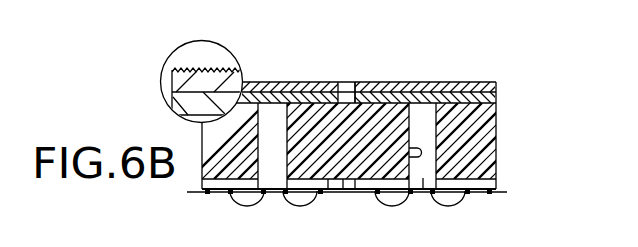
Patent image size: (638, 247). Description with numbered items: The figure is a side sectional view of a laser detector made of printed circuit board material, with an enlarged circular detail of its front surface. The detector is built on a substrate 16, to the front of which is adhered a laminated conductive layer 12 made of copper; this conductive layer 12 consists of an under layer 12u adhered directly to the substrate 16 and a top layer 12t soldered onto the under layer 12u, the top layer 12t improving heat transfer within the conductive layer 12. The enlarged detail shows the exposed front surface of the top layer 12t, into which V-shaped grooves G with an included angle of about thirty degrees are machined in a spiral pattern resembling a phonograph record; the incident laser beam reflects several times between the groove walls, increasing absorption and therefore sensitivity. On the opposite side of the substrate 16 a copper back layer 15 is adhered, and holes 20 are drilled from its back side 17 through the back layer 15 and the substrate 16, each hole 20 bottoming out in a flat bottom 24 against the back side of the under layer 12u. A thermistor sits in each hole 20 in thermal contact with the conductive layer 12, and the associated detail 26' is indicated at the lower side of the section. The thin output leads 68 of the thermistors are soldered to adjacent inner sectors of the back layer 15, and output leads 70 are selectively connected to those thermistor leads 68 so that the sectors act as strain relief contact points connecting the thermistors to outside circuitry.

The conductive layer 12 is at (476, 92).
The top layer 12t is at (494, 89).
The under layer 12u is at (495, 101).
The flat bottom 24 is at (418, 99).
The substrate 16 is at (486, 169).
The hole 20 is at (408, 153).
The back layer 15 is at (478, 188).
The back side 17 is at (342, 193).
The via / connection 26' is at (440, 206).
The thin output leads 68 is at (280, 206).
The output leads 70 is at (192, 193).
The grooves G is at (216, 66).